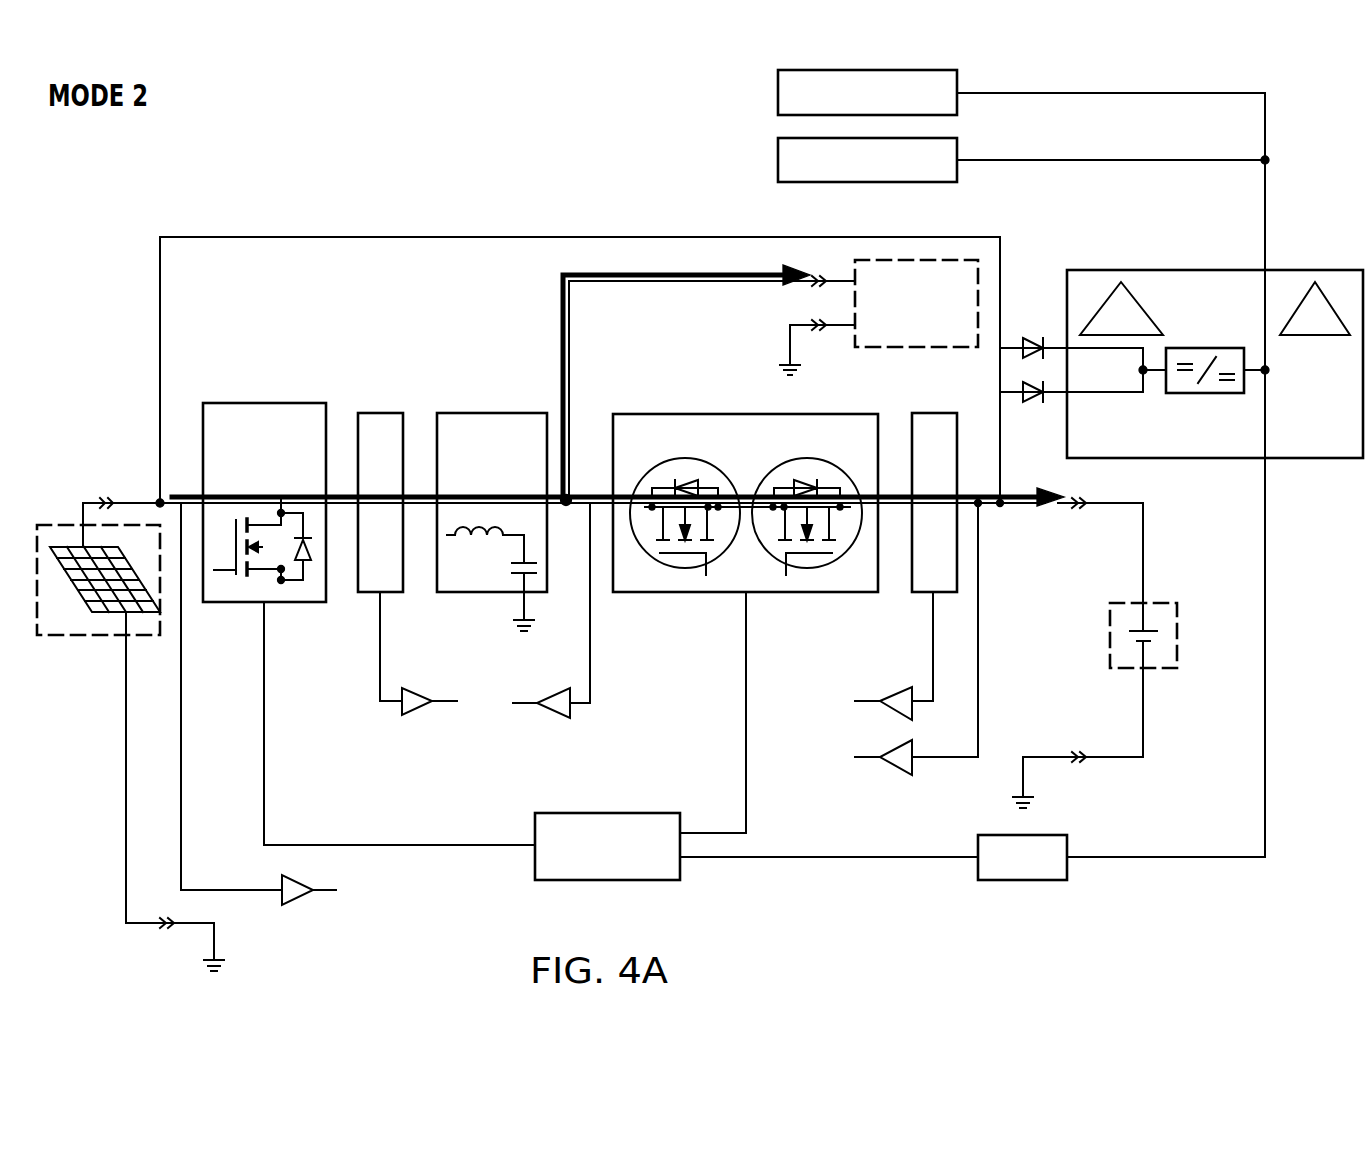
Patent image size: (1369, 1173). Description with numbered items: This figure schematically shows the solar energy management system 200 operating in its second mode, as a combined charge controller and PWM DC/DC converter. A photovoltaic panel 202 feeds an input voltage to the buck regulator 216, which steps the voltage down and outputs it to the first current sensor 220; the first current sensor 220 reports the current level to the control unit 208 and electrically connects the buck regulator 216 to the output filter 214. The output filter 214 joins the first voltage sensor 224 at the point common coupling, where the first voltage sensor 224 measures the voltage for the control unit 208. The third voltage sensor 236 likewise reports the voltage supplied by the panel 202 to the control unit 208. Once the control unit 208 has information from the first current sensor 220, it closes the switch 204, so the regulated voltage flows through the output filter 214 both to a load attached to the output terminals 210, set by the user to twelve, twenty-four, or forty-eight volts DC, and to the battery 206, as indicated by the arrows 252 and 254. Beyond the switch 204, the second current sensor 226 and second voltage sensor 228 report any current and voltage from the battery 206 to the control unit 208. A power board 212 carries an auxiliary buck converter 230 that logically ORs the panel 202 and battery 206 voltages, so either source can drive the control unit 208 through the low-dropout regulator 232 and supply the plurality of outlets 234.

The solar energy management system 200 is at (283, 150).
The photovoltaic panel 202 is at (100, 637).
The switch 204 is at (690, 408).
The battery storage 206 is at (1178, 636).
The control unit 208 is at (607, 883).
The output terminals 210 is at (923, 350).
The power board 212 is at (1303, 267).
The output filter 214 is at (468, 412).
The buck regulator 216 is at (245, 400).
The first current sensor 220 is at (420, 700).
The first voltage sensor 224 is at (545, 722).
The second current sensor 226 is at (895, 690).
The second voltage sensor 228 is at (895, 772).
The buck converter 230 is at (1205, 346).
The low-dropout regulator 232 is at (1022, 883).
The plurality of outlets 234 is at (672, 126).
The third voltage sensor 236 is at (298, 898).
The arrow 252 is at (562, 375).
The arrow 254 is at (1018, 493).